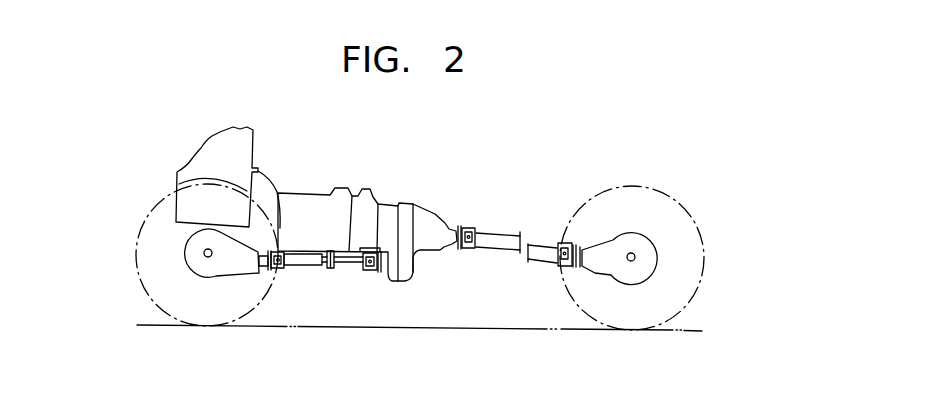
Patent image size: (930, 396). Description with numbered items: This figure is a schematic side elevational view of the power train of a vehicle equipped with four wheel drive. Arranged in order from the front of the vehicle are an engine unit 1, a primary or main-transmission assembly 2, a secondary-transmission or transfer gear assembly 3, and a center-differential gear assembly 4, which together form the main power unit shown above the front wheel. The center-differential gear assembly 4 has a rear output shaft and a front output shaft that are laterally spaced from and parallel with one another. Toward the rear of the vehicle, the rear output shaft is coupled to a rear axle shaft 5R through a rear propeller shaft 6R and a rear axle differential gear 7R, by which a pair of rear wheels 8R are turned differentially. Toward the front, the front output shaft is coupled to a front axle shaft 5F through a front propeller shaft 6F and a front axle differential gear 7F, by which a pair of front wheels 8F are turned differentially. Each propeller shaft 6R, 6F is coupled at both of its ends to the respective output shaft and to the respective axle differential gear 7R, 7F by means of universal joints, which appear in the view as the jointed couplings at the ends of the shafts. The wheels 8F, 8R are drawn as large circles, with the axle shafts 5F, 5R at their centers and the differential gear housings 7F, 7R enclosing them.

The engine unit 1 is at (215, 166).
The main-transmission assembly 2 is at (312, 193).
The transfer gear assembly 3 is at (393, 203).
The center-differential gear assembly 4 is at (433, 207).
The front axle shaft 5F is at (204, 254).
The rear axle shaft 5R is at (631, 253).
The front propeller shaft 6F is at (340, 265).
The rear propeller shaft 6R is at (495, 250).
The front axle differential gear 7F is at (231, 268).
The rear axle differential gear 7R is at (605, 244).
The front wheels 8F is at (157, 212).
The rear wheels 8R is at (683, 202).